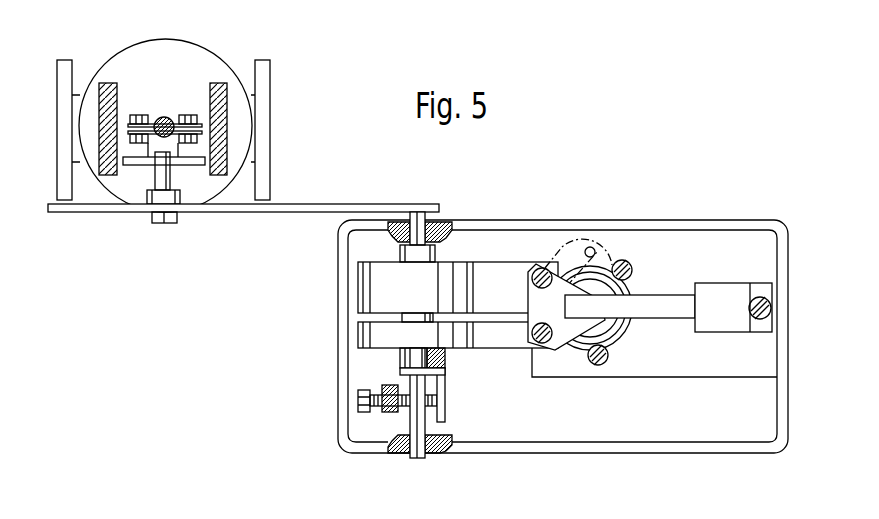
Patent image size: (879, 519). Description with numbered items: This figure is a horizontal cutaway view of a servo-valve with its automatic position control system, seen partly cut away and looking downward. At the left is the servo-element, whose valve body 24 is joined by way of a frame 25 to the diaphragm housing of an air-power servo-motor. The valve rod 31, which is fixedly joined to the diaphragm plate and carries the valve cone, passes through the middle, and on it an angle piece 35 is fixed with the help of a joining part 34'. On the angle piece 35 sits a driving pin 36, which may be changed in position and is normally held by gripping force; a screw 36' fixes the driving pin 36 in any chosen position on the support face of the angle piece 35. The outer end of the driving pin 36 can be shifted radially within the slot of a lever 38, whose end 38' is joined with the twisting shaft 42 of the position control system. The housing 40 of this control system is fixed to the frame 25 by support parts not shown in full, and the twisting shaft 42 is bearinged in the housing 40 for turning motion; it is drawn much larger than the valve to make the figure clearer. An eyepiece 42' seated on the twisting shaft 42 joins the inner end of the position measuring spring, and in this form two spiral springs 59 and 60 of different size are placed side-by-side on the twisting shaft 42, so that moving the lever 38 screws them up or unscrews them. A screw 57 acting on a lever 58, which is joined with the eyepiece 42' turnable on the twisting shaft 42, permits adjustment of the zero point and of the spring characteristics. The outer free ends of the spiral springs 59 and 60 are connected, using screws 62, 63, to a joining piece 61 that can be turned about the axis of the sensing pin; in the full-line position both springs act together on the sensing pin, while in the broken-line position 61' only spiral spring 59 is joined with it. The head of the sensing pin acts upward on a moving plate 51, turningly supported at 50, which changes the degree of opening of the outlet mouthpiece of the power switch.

The valve body 24 is at (220, 67).
The frame 25 is at (108, 87).
The valve rod 31 is at (157, 118).
The pin 34' is at (188, 74).
The angle piece 35 is at (140, 165).
The driving pin 36 is at (190, 204).
The screw 36' is at (173, 242).
The lever 38 is at (243, 191).
The end of lever 38' is at (429, 214).
The housing 40 is at (637, 454).
The twisting shaft 42 is at (405, 417).
The eyepiece 42' is at (369, 363).
The turning support 50 is at (759, 297).
The moving plate 51 is at (667, 297).
The screw 57 is at (358, 401).
The lever 58 is at (445, 412).
The spiral spring 59 is at (492, 272).
The spiral spring 60 is at (493, 335).
The joining piece 61 is at (590, 340).
The position of joining piece 61' is at (573, 254).
The screw 62 is at (533, 264).
The screw 63 is at (550, 351).